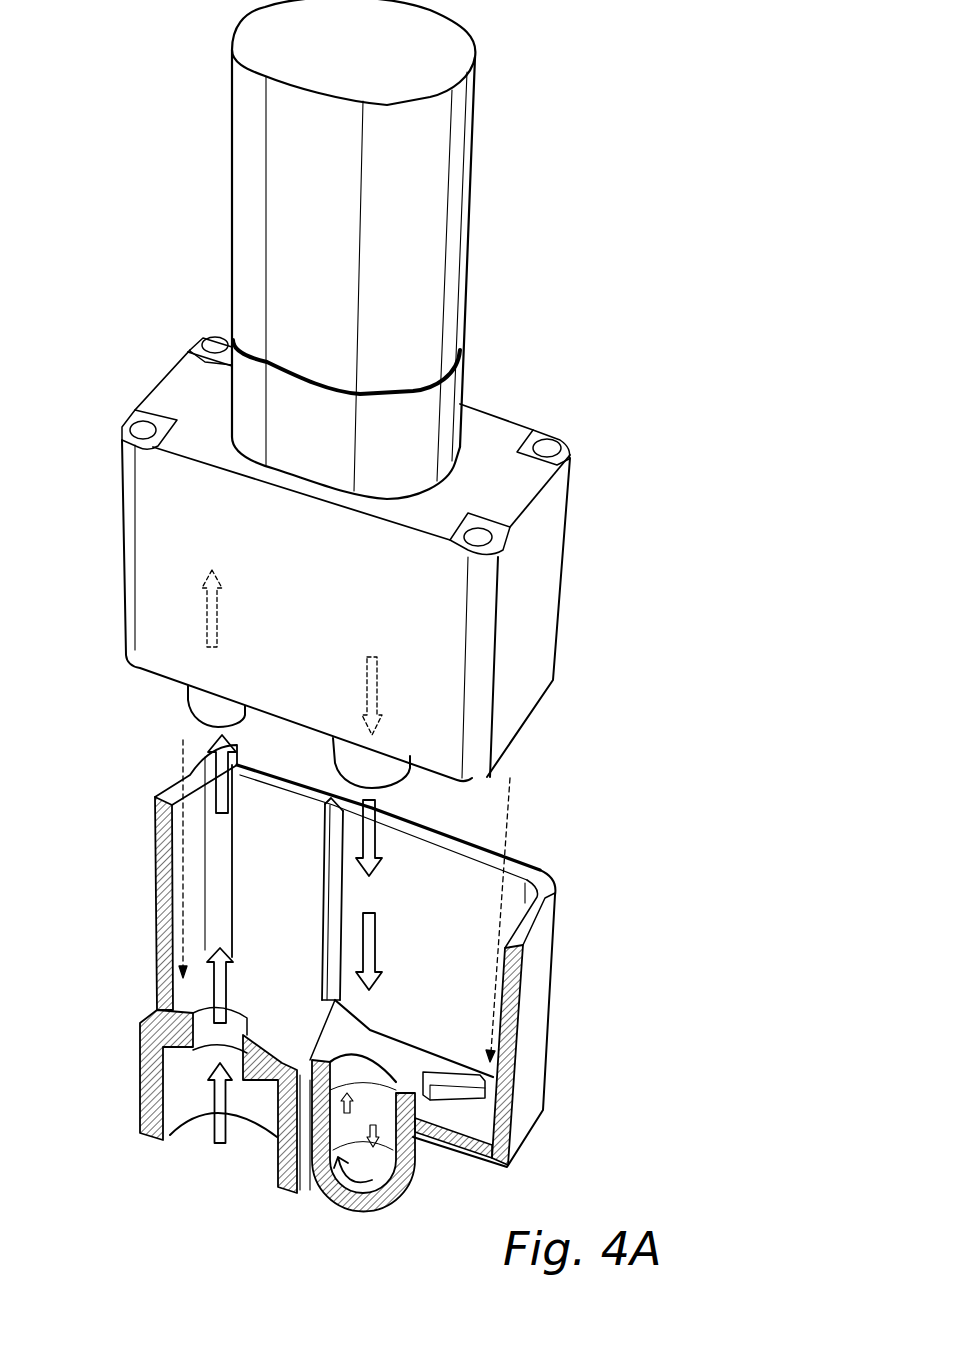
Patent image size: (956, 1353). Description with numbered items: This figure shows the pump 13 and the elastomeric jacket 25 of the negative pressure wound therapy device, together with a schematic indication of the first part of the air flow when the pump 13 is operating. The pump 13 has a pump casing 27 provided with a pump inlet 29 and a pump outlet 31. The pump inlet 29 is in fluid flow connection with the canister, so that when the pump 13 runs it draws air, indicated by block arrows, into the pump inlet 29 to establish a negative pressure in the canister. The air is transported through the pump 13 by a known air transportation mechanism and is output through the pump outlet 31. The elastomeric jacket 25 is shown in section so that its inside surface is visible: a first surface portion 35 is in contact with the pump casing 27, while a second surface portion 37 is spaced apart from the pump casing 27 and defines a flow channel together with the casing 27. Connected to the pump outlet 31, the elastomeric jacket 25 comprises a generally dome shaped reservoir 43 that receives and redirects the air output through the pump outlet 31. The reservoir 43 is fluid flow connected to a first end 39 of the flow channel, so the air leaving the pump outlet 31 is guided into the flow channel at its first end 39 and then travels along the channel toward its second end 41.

The pump 13 is at (538, 122).
The elastomeric jacket 25 is at (532, 1033).
The pump casing 27 is at (552, 582).
The pump inlet 29 is at (203, 725).
The pump outlet 31 is at (335, 794).
The first surface portion 35 is at (462, 907).
The second surface portion 37 is at (332, 915).
The first end of the flow channel 39 is at (330, 1077).
The second end of the flow channel 41 is at (337, 810).
The dome shaped reservoir 43 is at (408, 1180).